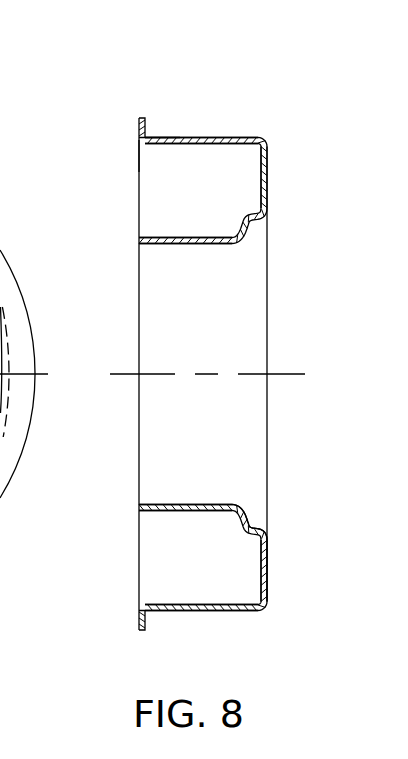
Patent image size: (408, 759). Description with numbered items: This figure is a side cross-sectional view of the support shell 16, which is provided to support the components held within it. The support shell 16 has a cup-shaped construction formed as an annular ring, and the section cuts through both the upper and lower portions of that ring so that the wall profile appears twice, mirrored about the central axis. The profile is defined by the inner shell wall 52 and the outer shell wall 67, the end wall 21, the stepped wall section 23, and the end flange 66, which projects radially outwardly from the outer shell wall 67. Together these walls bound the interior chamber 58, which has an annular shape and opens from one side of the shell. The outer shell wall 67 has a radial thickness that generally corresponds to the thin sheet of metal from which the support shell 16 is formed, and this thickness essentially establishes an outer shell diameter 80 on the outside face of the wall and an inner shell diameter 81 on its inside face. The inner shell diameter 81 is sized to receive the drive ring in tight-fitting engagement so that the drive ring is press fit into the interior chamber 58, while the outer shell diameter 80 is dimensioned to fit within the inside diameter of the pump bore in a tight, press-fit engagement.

The support shell 16 is at (186, 121).
The outer shell diameter 80 is at (163, 137).
The end flange 66 is at (140, 130).
The outer shell wall 67 is at (213, 138).
The inner shell diameter 81 is at (142, 158).
The interior chamber 58 is at (168, 185).
The inner shell wall 52 is at (150, 248).
The stepped wall section 23 is at (243, 520).
The end wall 21 is at (268, 570).